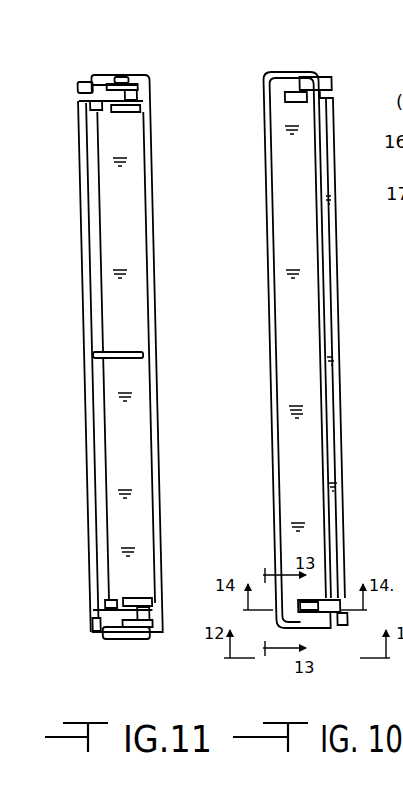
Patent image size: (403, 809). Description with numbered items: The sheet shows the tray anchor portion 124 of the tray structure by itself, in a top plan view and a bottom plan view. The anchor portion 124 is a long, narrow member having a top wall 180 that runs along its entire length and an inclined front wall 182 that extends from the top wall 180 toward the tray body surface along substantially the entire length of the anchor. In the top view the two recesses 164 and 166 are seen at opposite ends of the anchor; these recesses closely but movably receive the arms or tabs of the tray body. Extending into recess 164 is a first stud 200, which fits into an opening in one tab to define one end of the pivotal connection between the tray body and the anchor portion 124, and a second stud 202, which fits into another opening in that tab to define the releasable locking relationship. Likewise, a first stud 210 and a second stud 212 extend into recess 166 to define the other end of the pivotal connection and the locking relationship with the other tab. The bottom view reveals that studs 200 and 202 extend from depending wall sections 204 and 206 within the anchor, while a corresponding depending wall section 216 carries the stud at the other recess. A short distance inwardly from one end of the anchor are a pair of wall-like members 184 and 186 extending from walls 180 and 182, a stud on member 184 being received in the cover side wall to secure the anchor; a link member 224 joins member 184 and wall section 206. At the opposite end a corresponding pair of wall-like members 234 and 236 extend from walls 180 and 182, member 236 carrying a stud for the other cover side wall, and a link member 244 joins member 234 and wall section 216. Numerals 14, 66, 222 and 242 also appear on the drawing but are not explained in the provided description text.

In FIG. 11, the support channel 14 is at (93, 112).
In FIG. 11, the tab 66 is at (80, 97).
In FIG. 10, the tray anchor portion 124 is at (262, 342).
In FIG. 10, the recess 164 is at (333, 621).
In FIG. 11, the recess 166 is at (104, 615).
In FIG. 10, the recess 166 is at (327, 102).
In FIG. 10, the top wall 180 is at (287, 250).
In FIG. 10, the inclined front wall 182 is at (330, 295).
In FIG. 11, the wall-like member 184 is at (160, 633).
In FIG. 11, the wall-like member 186 is at (100, 632).
In FIG. 11, the first stud 200 is at (104, 610).
In FIG. 10, the first stud 200 is at (313, 615).
In FIG. 11, the second stud 202 is at (153, 611).
In FIG. 10, the second stud 202 is at (307, 612).
In FIG. 11, the depending wall section 204 is at (105, 600).
In FIG. 11, the depending wall section 206 is at (133, 602).
In FIG. 11, the first stud 210 is at (91, 104).
In FIG. 10, the first stud 210 is at (308, 101).
In FIG. 11, the second stud 212 is at (134, 106).
In FIG. 10, the second stud 212 is at (297, 93).
In FIG. 11, the depending wall section 216 is at (123, 112).
In FIG. 11, the bottom edge 222 is at (137, 634).
In FIG. 11, the link member 224 is at (148, 618).
In FIG. 11, the wall-like member 234 is at (134, 76).
In FIG. 11, the wall-like member 236 is at (89, 80).
In FIG. 11, the bump 242 is at (121, 76).
In FIG. 11, the link member 244 is at (134, 96).